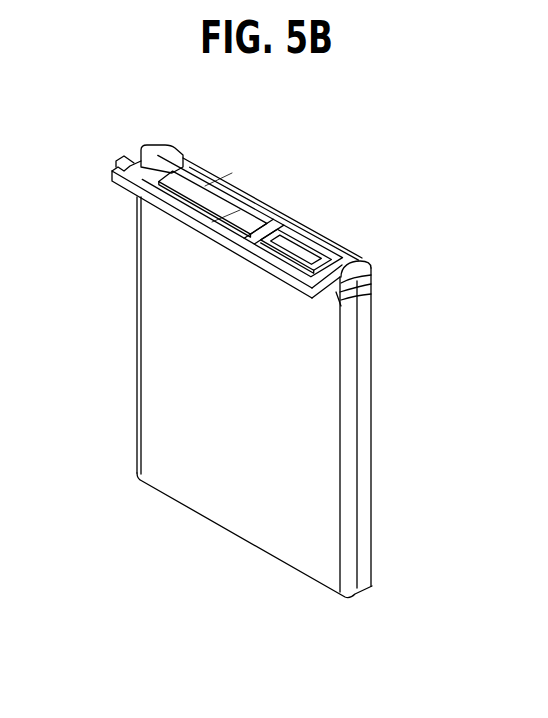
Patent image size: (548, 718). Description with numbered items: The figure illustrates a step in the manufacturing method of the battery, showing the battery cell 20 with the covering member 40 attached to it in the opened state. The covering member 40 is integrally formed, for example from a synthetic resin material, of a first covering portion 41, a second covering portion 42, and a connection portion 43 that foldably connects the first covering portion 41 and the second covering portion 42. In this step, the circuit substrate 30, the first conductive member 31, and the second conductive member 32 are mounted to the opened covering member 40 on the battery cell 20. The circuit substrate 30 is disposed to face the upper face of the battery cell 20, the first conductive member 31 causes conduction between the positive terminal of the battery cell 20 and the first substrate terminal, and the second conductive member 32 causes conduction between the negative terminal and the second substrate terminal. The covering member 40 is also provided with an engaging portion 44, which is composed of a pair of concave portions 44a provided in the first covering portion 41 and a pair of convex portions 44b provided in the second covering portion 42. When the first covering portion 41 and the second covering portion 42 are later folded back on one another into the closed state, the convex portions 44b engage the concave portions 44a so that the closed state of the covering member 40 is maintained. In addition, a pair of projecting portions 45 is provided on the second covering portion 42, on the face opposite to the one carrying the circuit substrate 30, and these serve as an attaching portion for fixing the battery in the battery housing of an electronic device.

The battery cell 20 is at (318, 407).
The circuit substrate 30 is at (242, 183).
The first conductive member 31 is at (202, 200).
The second conductive member 32 is at (318, 240).
The covering member 40 is at (343, 183).
The first covering portion 41 is at (363, 259).
The second covering portion 42 is at (373, 288).
The connection portion 43 is at (330, 241).
The engaging portion 44 is at (116, 128).
The concave portion 44a is at (180, 150).
The convex portion 44b is at (98, 150).
The projecting portion 45 is at (345, 322).